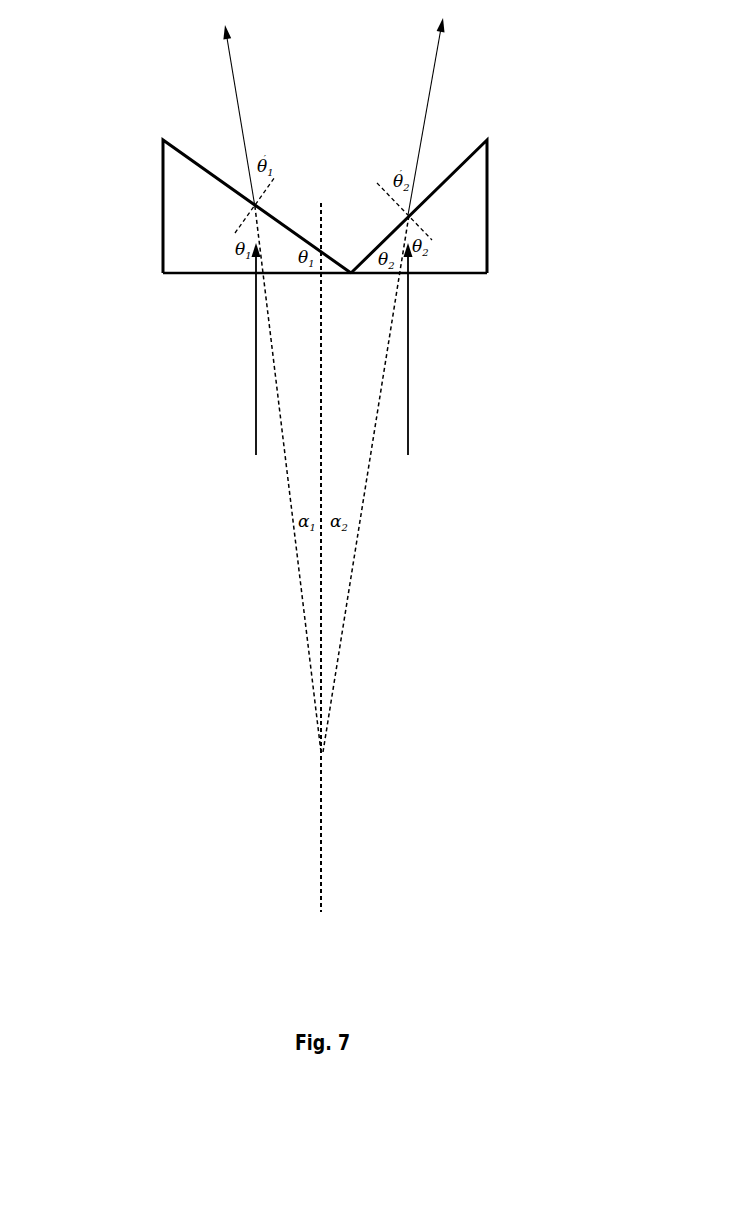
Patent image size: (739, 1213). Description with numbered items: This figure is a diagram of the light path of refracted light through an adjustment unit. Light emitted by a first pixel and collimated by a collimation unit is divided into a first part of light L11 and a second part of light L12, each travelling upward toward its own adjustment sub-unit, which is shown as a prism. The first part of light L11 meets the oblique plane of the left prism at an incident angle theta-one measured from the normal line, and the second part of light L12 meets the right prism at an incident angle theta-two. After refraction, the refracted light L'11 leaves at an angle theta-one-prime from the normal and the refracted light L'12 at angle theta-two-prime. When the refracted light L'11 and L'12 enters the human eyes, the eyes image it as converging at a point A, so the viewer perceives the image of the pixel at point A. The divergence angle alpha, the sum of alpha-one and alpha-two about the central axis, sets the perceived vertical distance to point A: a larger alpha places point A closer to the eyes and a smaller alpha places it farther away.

The first part of light L11 is at (234, 371).
The second part of light L12 is at (430, 371).
The refracted light of the first part of light L'11 is at (214, 113).
The refracted light of the second part of light L'12 is at (453, 116).
The point A is at (332, 488).